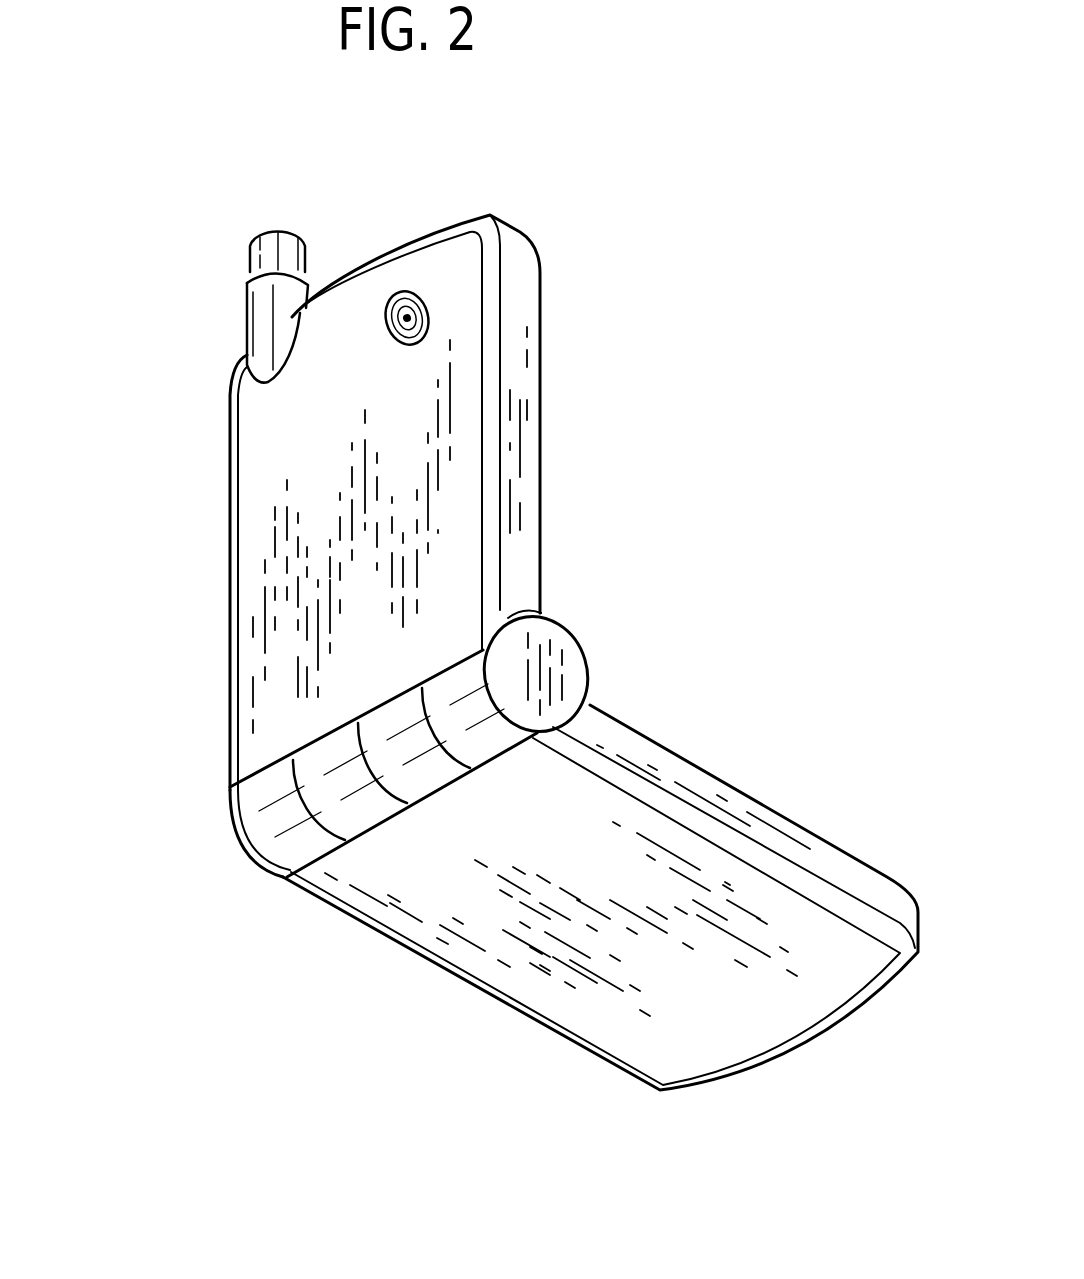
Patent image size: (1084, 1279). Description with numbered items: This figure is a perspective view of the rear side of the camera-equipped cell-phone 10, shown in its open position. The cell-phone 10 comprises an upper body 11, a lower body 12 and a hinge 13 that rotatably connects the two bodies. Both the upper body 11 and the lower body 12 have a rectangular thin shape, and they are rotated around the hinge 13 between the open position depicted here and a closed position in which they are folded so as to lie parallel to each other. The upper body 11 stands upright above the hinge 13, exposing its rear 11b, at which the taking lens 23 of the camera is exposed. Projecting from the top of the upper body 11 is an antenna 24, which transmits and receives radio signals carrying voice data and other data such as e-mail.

The camera-equipped cell-phone 10 is at (572, 181).
The upper body 11 is at (230, 545).
The rear of the upper body 11b is at (260, 635).
The lower body 12 is at (540, 1032).
The hinge 13 is at (572, 680).
The taking lens 23 is at (425, 322).
The antenna 24 is at (273, 260).